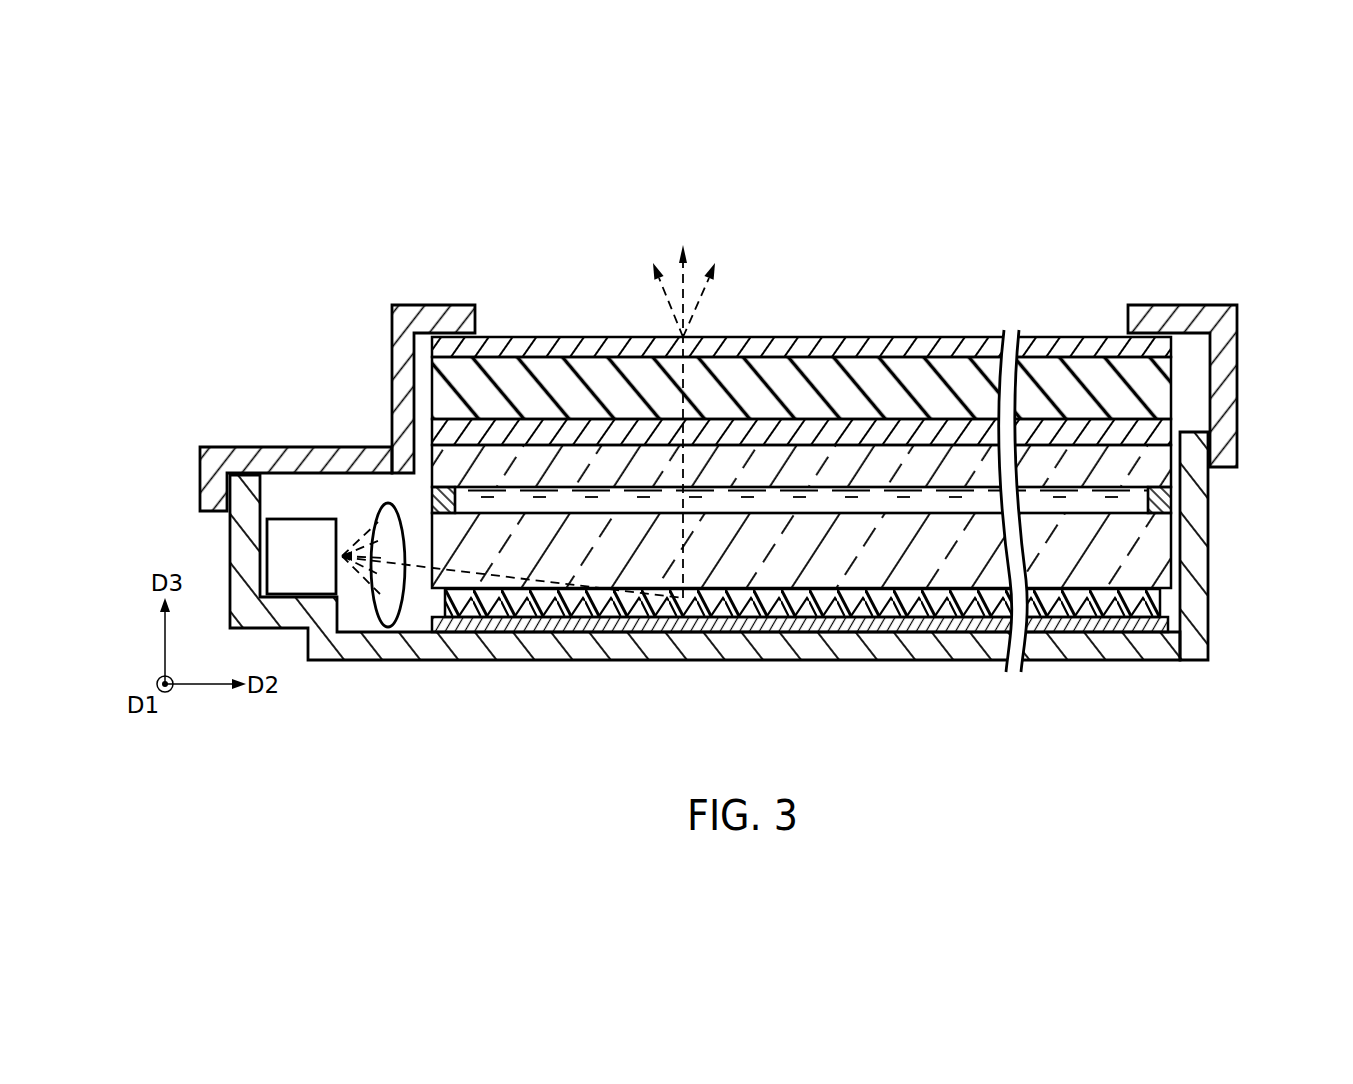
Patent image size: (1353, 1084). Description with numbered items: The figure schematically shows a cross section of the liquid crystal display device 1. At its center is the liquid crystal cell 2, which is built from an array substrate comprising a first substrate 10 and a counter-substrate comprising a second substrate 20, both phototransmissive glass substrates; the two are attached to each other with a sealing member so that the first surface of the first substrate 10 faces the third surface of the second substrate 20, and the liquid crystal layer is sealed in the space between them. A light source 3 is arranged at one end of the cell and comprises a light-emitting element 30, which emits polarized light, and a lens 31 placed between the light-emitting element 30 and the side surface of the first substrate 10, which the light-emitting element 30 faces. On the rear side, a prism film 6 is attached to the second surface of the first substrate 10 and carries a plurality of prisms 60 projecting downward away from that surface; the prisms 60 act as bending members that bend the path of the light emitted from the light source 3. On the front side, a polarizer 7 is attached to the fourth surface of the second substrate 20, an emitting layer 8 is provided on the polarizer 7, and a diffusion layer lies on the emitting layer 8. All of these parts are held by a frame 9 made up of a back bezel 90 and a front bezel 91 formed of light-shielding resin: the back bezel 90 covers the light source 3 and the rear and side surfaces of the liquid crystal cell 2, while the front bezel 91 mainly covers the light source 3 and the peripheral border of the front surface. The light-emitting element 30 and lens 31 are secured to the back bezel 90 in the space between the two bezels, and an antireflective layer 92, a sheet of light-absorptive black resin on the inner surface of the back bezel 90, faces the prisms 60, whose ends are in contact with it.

The liquid crystal display device 1 is at (726, 455).
The liquid crystal cell 2 is at (845, 443).
The light source 3 is at (336, 493).
The light-emitting element 30 is at (303, 527).
The lens 31 is at (372, 522).
The prism film 6 is at (1160, 602).
The polarizer 7 is at (765, 437).
The emitting layer 8 is at (818, 372).
The frame 9 is at (647, 482).
The back bezel 90 is at (230, 548).
The front bezel 91 is at (200, 470).
The antireflective layer 92 is at (753, 625).
The prisms 60 is at (558, 603).
The first substrate 10 is at (870, 553).
The second substrate 20 is at (1162, 476).